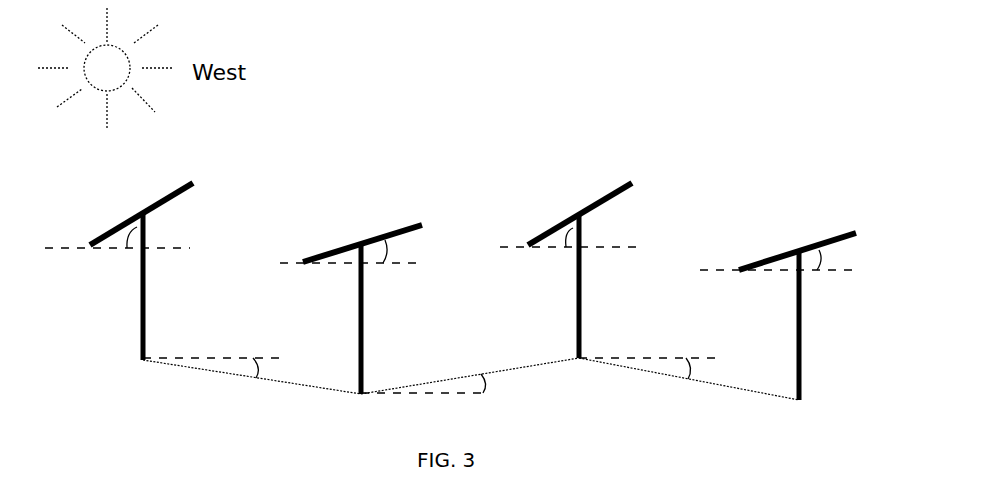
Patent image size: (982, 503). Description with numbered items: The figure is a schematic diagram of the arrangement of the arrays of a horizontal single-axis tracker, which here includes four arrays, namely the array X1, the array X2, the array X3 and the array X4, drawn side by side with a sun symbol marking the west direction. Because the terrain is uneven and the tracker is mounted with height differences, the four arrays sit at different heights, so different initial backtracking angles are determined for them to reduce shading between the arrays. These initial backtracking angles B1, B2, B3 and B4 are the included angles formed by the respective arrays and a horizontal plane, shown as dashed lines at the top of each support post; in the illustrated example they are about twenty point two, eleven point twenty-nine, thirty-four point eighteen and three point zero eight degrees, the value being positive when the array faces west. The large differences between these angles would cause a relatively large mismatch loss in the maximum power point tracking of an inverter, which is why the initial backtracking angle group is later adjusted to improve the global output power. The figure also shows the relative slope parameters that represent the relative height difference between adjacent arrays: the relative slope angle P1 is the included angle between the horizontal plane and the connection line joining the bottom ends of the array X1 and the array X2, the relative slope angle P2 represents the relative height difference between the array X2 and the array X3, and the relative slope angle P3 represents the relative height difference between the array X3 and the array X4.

The array X1 is at (129, 270).
The array X2 is at (345, 303).
The array X3 is at (559, 270).
The array X4 is at (786, 309).
The initial backtracking angle B1 is at (152, 237).
The initial backtracking angle B2 is at (403, 252).
The initial backtracking angle B3 is at (589, 234).
The initial backtracking angle B4 is at (836, 259).
The relative slope angle P1 is at (269, 367).
The relative slope angle P2 is at (499, 386).
The relative slope angle P3 is at (711, 379).